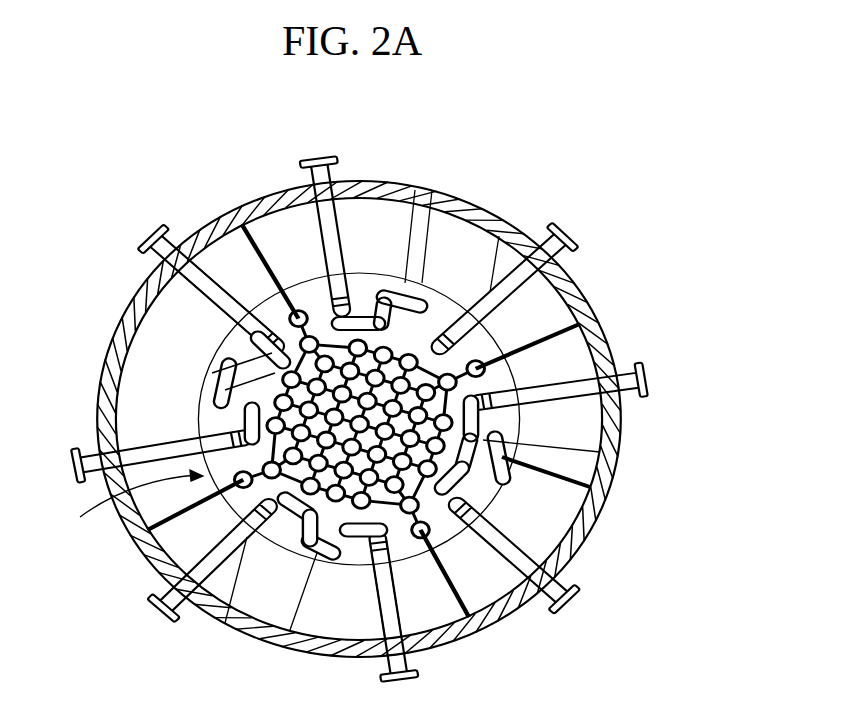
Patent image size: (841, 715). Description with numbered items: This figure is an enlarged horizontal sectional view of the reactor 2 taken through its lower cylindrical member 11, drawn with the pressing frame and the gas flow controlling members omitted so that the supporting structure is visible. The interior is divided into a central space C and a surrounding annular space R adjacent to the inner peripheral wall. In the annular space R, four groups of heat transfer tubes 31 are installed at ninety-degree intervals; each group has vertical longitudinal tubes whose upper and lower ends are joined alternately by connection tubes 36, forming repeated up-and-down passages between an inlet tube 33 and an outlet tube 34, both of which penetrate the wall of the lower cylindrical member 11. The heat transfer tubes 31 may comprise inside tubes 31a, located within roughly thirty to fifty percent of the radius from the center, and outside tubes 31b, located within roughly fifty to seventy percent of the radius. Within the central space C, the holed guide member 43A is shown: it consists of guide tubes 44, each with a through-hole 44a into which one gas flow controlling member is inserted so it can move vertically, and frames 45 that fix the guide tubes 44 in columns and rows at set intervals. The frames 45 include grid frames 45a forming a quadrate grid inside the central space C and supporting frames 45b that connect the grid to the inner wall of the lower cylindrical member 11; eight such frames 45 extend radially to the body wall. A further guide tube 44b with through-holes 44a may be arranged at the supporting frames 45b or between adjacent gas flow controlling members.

The reactor 2 is at (488, 167).
The lower cylindrical member 11 is at (203, 229).
The heat transfer tubes 31 is at (408, 255).
The inside tubes 31a is at (388, 290).
The outside tubes 31b is at (440, 215).
The inlet tube 33 is at (498, 292).
The outlet tube 34 is at (338, 250).
The connection tubes 36 is at (500, 446).
The holed guide member 43A is at (510, 578).
The guide tube 44 is at (320, 310).
The through-holes 44a is at (428, 355).
The guide tube 44b is at (178, 548).
The frames 45 is at (533, 338).
The grid frames 45a is at (272, 323).
The supporting frames 45b is at (262, 240).
The central space C is at (430, 424).
The annular space R is at (126, 499).